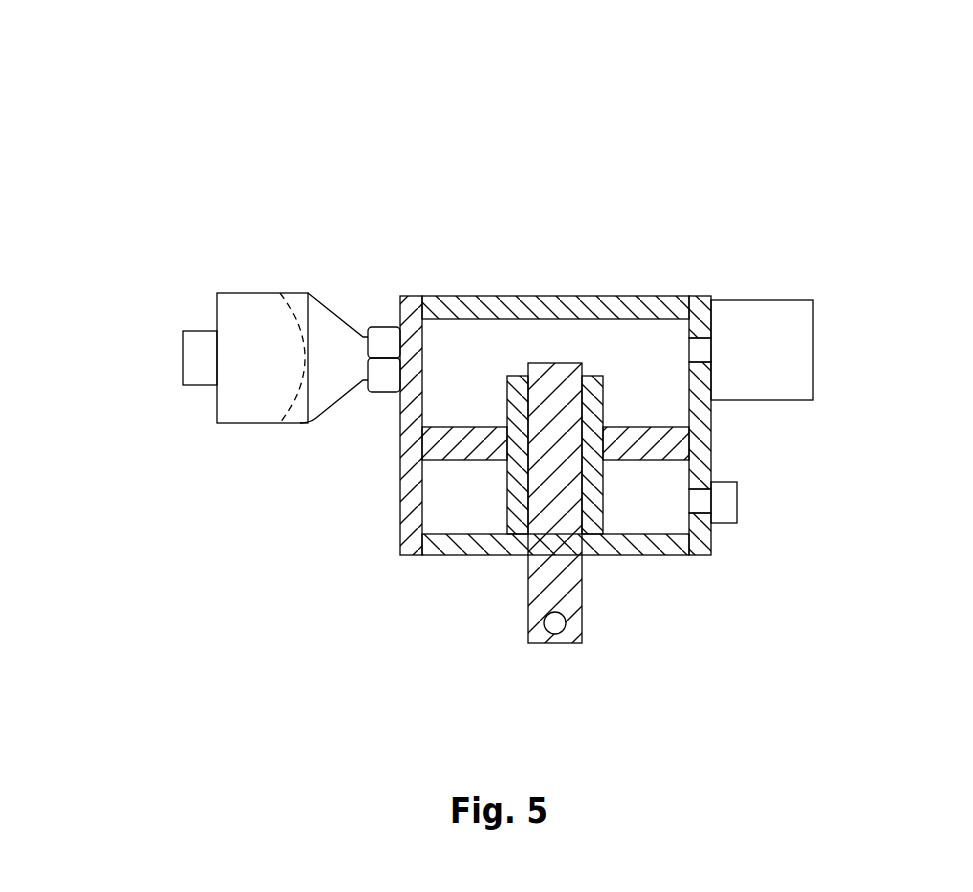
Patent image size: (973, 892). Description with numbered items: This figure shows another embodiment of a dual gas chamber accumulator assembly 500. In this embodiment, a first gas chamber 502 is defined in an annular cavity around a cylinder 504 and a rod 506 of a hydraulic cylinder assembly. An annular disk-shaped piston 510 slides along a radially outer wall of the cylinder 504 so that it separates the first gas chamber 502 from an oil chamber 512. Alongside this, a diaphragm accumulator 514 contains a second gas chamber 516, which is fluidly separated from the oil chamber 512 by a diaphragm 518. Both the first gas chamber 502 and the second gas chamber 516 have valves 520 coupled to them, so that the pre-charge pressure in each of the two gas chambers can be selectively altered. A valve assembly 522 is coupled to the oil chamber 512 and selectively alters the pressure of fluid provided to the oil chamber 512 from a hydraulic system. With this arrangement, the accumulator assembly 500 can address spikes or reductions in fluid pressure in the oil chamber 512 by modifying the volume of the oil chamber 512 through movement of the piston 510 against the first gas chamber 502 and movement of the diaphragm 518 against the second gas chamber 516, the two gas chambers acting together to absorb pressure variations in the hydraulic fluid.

The dual gas chamber accumulator assembly 500 is at (765, 157).
The first gas chamber 502 is at (494, 383).
The cylinder 504 is at (516, 496).
The rod 506 is at (577, 603).
The annular disk-shaped piston 510 is at (643, 433).
The oil chamber 512 is at (597, 330).
The diaphragm accumulator 514 is at (262, 313).
The second gas chamber 516 is at (258, 392).
The diaphragm 518 is at (295, 313).
The valves 520 is at (737, 502).
The valve assembly 522 is at (800, 349).